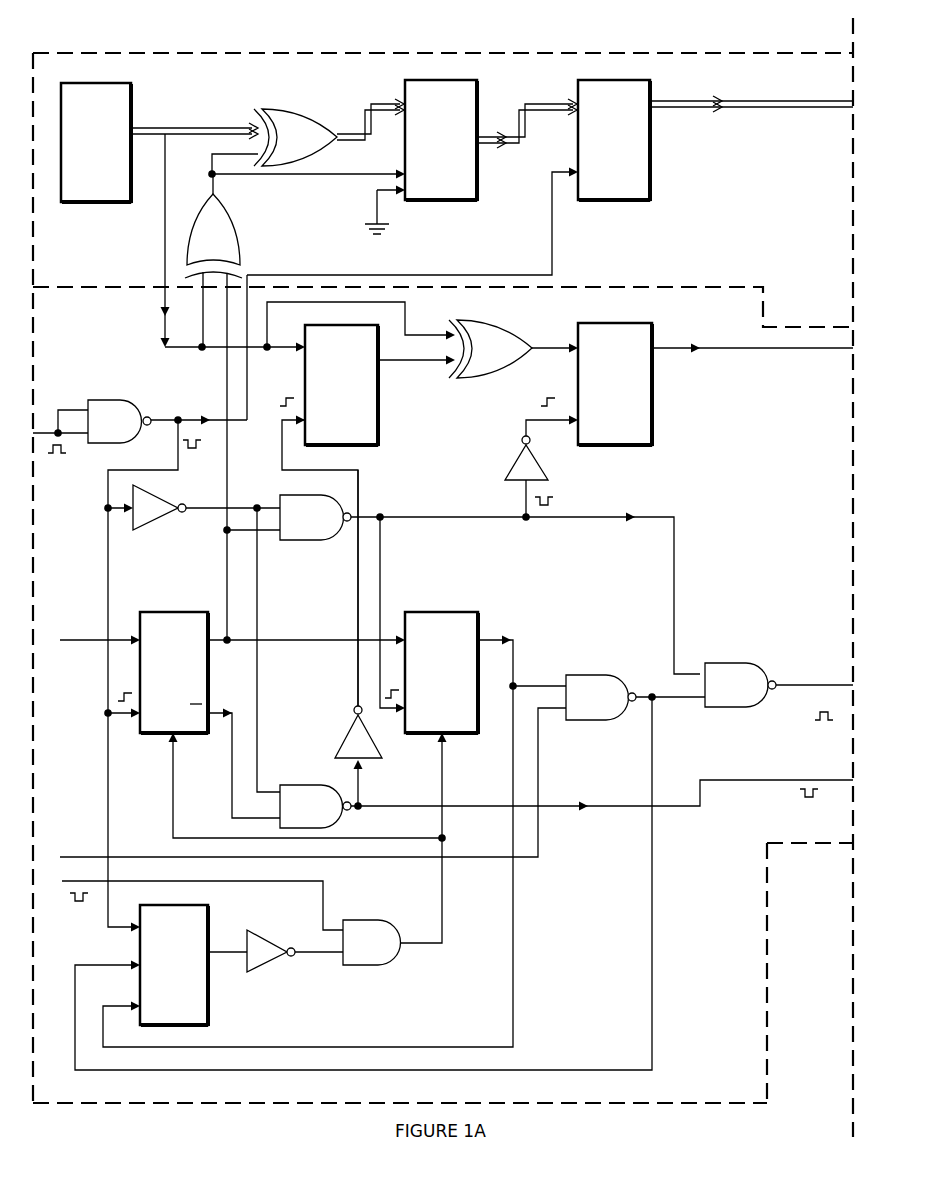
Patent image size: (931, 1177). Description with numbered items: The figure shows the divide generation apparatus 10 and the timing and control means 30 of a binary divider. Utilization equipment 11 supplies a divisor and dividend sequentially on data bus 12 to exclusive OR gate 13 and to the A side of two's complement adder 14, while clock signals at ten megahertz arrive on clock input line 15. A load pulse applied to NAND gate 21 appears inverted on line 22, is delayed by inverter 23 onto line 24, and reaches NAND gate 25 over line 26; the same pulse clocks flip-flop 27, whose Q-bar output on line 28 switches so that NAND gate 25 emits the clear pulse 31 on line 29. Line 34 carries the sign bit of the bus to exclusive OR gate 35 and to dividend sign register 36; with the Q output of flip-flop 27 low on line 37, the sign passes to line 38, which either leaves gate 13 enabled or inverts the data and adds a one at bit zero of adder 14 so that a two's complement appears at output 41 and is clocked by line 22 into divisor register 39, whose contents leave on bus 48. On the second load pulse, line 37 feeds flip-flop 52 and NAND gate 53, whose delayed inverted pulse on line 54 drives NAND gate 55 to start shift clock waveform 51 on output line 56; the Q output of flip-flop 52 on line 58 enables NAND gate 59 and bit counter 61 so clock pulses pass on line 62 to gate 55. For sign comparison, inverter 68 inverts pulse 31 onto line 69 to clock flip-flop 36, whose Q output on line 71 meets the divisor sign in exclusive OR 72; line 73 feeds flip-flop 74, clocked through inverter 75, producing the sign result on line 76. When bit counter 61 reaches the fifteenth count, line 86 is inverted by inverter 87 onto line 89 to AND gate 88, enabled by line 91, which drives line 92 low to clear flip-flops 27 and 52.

The divide generation apparatus 10 is at (541, 50).
The utilization equipment 11 is at (103, 82).
The data bus 12 is at (148, 127).
The exclusive OR gate 13 is at (300, 113).
The two's complement adder 14 is at (478, 90).
The clock input line 15 is at (88, 855).
The NAND gate 21 is at (125, 388).
The line 22 is at (404, 274).
The inverter 23 is at (164, 502).
The line 24 is at (243, 505).
The NAND gate 25 is at (312, 785).
The line 26 is at (258, 754).
The flip-flop 27 is at (169, 612).
The line 28 is at (230, 802).
The line 29 is at (400, 808).
The timing and control means 30 is at (98, 295).
The clear pulse 31 is at (800, 803).
The line 34 is at (165, 232).
The exclusive OR gate 35 is at (240, 237).
The dividend sign register 36 is at (380, 420).
The line 37 is at (230, 450).
The line 38 is at (257, 178).
The divisor register 39 is at (655, 92).
The output 41 is at (539, 102).
The bus 48 is at (767, 108).
The shift clock waveform 51 is at (813, 722).
The flip-flop 52 is at (463, 612).
The NAND gate 53 is at (303, 542).
The line 54 is at (383, 545).
The NAND gate 55 is at (740, 663).
The output line 56 is at (784, 672).
The line 58 is at (527, 680).
The NAND gate 59 is at (601, 685).
The bit counter 61 is at (210, 1010).
The line 62 is at (654, 712).
The inverter 68 is at (385, 752).
The line 69 is at (358, 671).
The line 71 is at (418, 363).
The exclusive OR 72 is at (503, 378).
The line 73 is at (548, 345).
The flip-flop 74 is at (637, 323).
The inverter 75 is at (540, 460).
The line 76 is at (708, 350).
The line 86 is at (232, 948).
The inverter 87 is at (275, 936).
The AND gate 88 is at (395, 921).
The line 89 is at (318, 955).
The line 91 is at (325, 898).
The line 92 is at (173, 814).